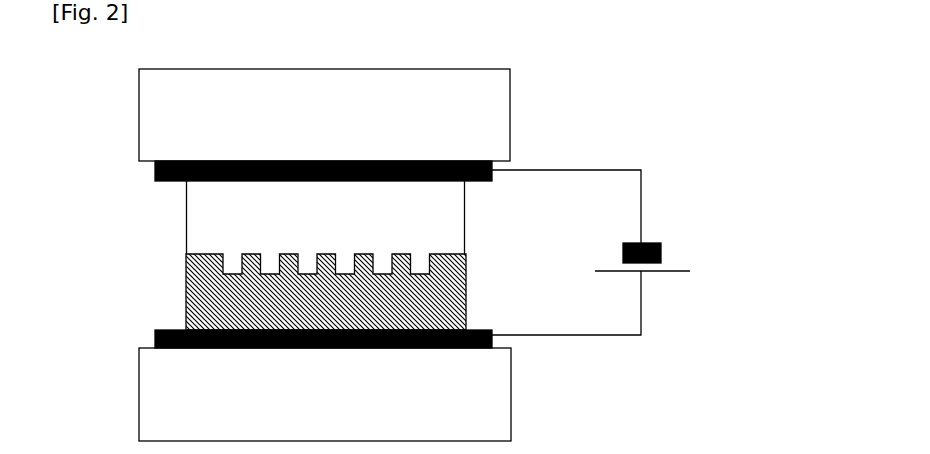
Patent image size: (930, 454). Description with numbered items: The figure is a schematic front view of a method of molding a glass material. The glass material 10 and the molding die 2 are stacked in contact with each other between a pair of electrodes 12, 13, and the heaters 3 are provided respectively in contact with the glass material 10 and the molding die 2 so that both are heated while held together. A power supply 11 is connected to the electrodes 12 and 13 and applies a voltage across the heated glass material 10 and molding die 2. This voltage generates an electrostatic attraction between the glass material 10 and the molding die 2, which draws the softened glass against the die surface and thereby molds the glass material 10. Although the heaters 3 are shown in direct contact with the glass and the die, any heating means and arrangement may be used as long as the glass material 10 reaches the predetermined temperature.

The molding die 2 is at (220, 307).
The heater 3 is at (185, 135).
The glass material 10 is at (222, 219).
The power supply 11 is at (670, 262).
The electrode 12 is at (477, 157).
The electrode 13 is at (480, 349).